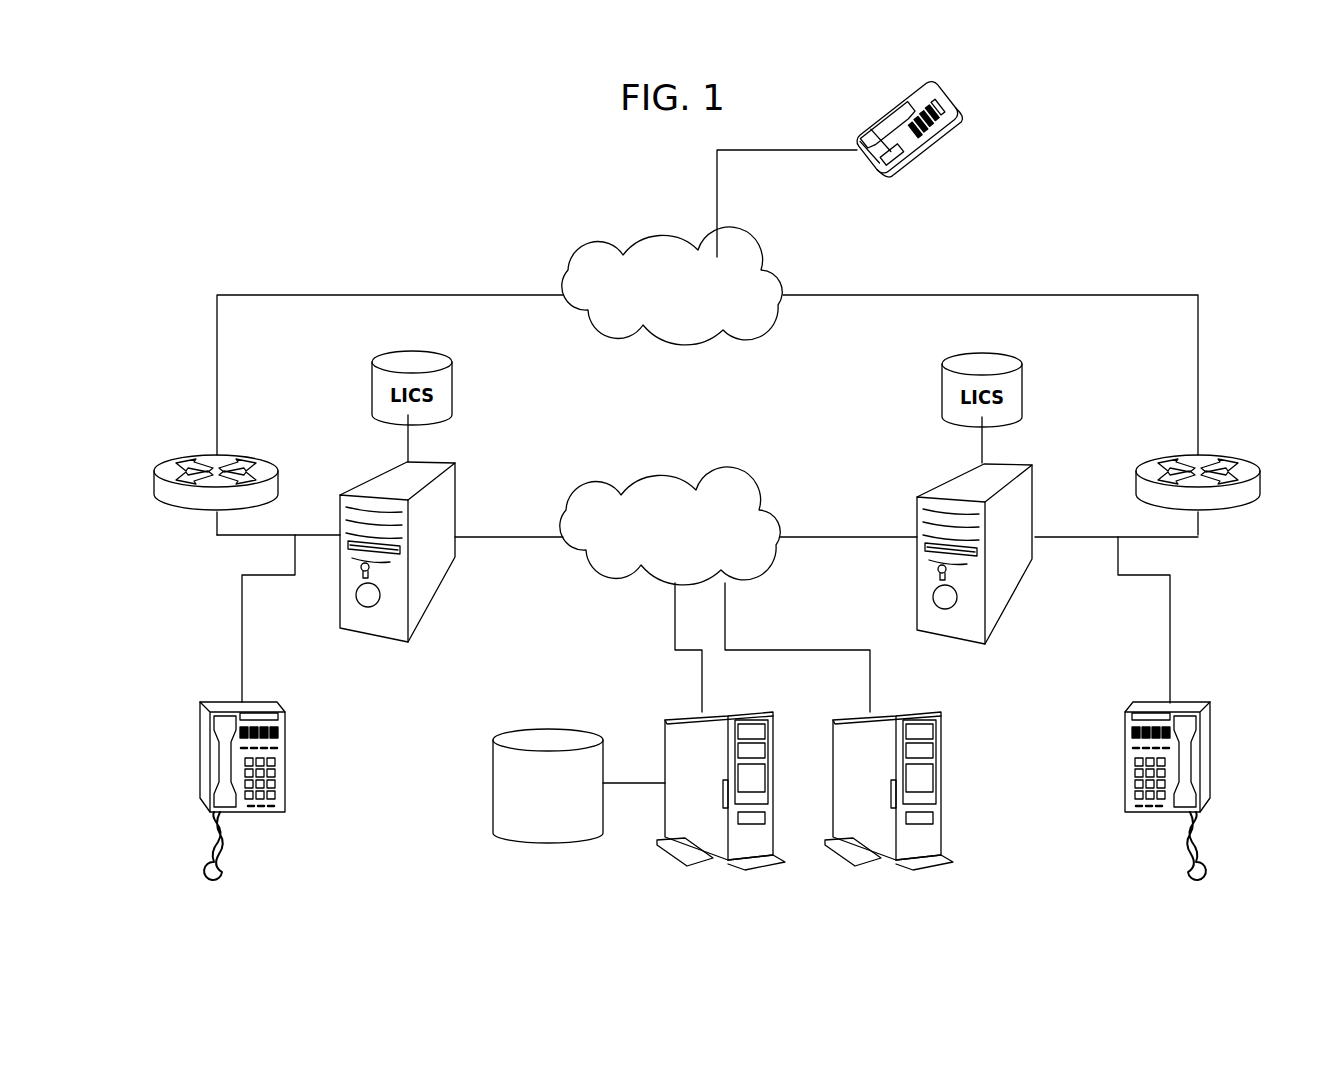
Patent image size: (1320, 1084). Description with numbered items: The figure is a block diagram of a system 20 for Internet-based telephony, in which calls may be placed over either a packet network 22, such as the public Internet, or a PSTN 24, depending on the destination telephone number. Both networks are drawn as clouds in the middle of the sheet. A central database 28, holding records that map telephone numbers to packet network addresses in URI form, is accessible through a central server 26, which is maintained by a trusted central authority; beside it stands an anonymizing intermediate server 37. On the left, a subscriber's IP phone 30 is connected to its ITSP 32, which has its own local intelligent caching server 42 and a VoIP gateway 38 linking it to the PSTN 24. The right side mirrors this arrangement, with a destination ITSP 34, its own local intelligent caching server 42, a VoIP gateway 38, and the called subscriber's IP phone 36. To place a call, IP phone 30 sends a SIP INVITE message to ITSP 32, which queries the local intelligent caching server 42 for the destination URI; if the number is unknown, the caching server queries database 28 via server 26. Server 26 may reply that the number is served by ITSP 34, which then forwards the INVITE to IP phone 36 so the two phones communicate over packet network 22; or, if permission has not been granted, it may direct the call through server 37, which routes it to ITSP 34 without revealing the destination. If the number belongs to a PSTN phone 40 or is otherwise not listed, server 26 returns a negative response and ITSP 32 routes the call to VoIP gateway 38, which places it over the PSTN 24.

The system 20 is at (370, 198).
The packet network 22 is at (648, 478).
The PSTN 24 is at (648, 238).
The central server 26 is at (735, 712).
The central database 28 is at (548, 730).
The IP phone 30 is at (200, 718).
The ITSP 32 is at (457, 490).
The destination ITSP 34 is at (918, 495).
The IP phone 36 is at (1212, 718).
The anonymizing intermediate server 37 is at (904, 712).
The VoIP gateway 38 is at (278, 458).
The PSTN phone 40 is at (957, 103).
The local intelligent caching server 42 is at (452, 386).